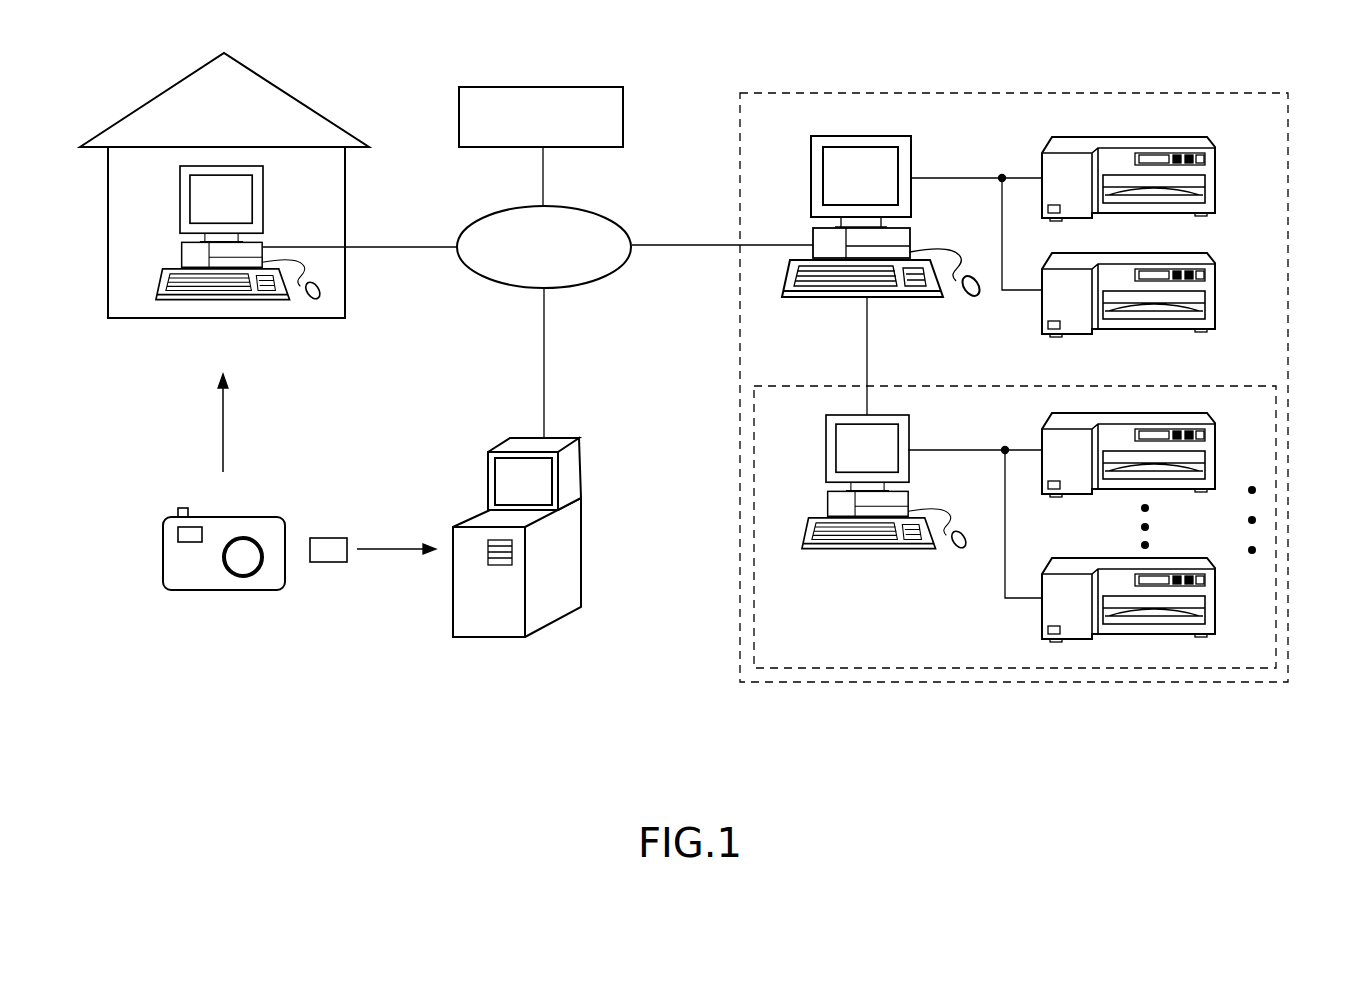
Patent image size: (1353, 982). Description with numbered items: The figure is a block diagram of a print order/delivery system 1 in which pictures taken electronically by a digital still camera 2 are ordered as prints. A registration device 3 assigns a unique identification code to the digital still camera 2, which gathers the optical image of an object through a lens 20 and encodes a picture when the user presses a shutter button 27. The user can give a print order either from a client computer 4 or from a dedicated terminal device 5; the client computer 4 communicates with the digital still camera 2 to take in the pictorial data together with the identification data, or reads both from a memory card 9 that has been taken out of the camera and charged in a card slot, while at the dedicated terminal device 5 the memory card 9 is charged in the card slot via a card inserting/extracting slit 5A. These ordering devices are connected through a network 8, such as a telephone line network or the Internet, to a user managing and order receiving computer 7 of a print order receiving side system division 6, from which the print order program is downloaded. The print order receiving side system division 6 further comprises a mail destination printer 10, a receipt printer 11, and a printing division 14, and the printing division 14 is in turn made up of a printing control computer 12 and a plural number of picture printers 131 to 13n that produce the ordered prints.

The print order/delivery system 1 is at (1137, 726).
The digital still camera 2 is at (222, 508).
The lens 20 is at (250, 538).
The shutter button 27 is at (180, 508).
The memory card 9 is at (330, 563).
The registration device 3 is at (623, 110).
The client computer 4 is at (253, 297).
The dedicated terminal device 5 is at (519, 462).
The card inserting/extracting slit 5A is at (488, 564).
The print order receiving side system division 6 is at (1148, 93).
The user managing and order receiving computer 7 is at (905, 136).
The network 8 is at (600, 211).
The mail destination printer 10 is at (1215, 178).
The receipt printer 11 is at (1215, 290).
The printing control computer 12 is at (900, 415).
The picture printer 131 is at (1217, 450).
The picture printer 13n is at (1217, 597).
The printing division 14 is at (1155, 385).